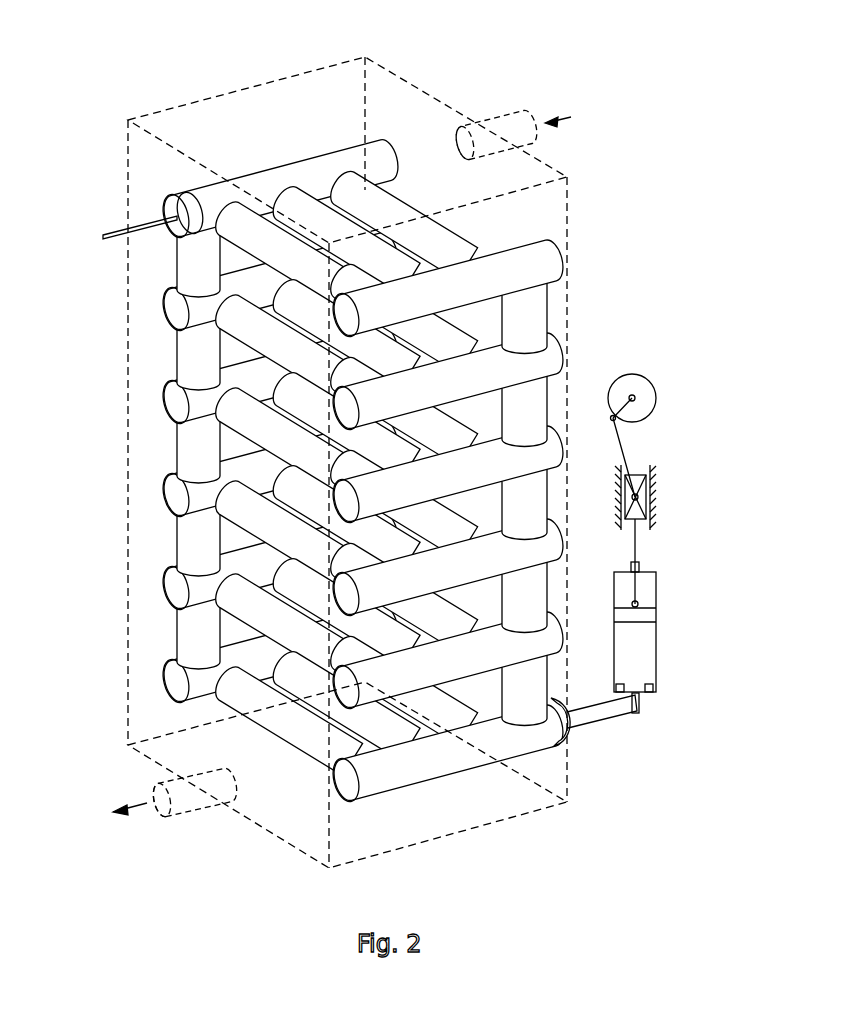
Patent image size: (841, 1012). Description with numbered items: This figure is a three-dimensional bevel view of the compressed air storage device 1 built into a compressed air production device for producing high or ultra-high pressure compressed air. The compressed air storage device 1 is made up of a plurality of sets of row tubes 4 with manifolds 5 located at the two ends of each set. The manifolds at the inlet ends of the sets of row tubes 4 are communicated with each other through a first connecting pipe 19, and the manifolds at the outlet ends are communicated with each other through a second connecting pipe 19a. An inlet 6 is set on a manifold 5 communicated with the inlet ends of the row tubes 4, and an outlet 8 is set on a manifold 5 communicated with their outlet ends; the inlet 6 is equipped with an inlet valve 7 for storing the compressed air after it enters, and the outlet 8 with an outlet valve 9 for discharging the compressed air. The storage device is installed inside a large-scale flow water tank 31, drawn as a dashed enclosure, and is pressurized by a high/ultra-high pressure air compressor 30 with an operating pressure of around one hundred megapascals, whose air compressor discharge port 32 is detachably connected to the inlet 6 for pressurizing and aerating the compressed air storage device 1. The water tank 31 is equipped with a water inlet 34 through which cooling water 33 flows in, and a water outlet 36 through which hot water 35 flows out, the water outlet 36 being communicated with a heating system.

The compressed air storage device 1 is at (319, 437).
The row tubes 4 is at (358, 198).
The manifolds 5 is at (273, 182).
The inlet 6 is at (602, 710).
The inlet valve 7 is at (566, 732).
The outlet 8 is at (143, 221).
The outlet valve 9 is at (178, 198).
The first connecting pipe 19 is at (533, 690).
The second connecting pipe 19a is at (236, 370).
The high/ultra-high pressure air compressor 30 is at (637, 663).
The large-scale flow water tank 31 is at (487, 803).
The air compressor discharge port 32 is at (633, 702).
The cooling water 33 is at (555, 114).
The water inlet 34 is at (512, 125).
The hot water 35 is at (137, 818).
The water outlet 36 is at (193, 803).